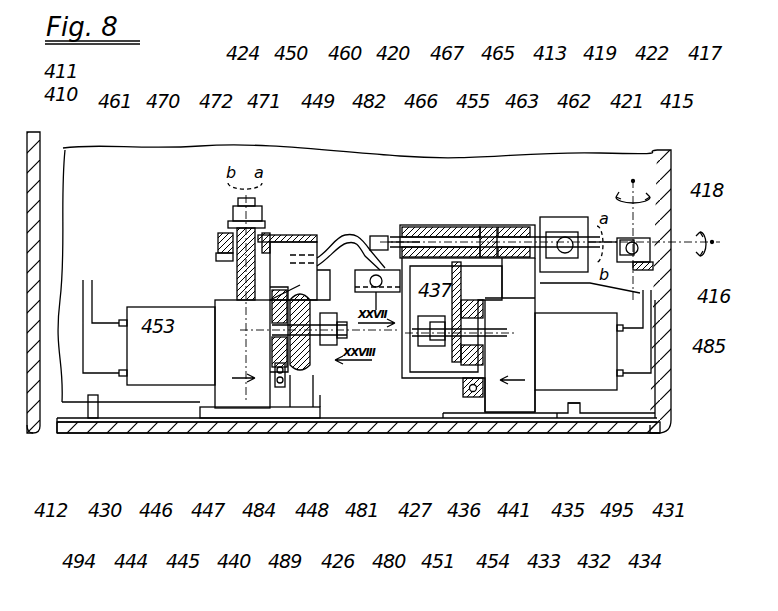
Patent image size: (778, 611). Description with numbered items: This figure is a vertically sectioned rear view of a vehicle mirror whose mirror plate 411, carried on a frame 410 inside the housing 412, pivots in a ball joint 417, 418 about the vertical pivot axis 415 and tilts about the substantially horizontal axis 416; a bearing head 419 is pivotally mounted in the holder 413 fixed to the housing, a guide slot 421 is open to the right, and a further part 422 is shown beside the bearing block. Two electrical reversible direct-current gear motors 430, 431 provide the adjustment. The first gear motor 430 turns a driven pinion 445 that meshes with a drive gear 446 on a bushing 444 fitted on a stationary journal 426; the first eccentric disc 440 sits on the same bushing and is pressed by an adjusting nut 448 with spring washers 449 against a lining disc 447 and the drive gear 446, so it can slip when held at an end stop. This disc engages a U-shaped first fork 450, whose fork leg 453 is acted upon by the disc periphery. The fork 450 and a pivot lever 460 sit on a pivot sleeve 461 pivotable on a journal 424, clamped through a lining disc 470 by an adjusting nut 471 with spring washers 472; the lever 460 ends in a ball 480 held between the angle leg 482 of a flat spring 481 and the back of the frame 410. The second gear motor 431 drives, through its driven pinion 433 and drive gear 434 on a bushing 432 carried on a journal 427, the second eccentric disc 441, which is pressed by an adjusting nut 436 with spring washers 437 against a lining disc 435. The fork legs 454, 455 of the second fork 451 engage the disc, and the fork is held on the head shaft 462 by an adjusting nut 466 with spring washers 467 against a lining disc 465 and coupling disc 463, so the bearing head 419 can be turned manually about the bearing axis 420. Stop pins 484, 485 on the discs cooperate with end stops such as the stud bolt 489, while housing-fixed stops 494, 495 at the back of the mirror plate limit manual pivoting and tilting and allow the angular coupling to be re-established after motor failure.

The frame 410 is at (83, 172).
The mirror plate 411 is at (57, 82).
The housing 412 is at (39, 430).
The holder 413 is at (512, 235).
The vertical pivot axis 415 is at (633, 180).
The horizontal axis 416 is at (712, 250).
The ball joint 417 is at (665, 230).
The ball joint 418 is at (652, 250).
The bearing head 419 is at (548, 235).
The bearing axis 420 is at (365, 245).
The guide slot 421 is at (560, 243).
The shaft end 422 is at (587, 230).
The journal 424 is at (246, 212).
The stationary journal 426 is at (372, 400).
The journal 427 is at (428, 380).
The first gear motor 430 is at (178, 355).
The second gear motor 431 is at (622, 402).
The bushing 432 is at (555, 395).
The driven pinion 433 is at (500, 405).
The drive gear 434 is at (592, 405).
The slip or brake lining disc 435 is at (530, 410).
The adjusting nut 436 is at (455, 370).
The spring washers 437 is at (452, 312).
The first eccentric disc 440 is at (300, 395).
The second eccentric disc 441 is at (478, 345).
The bushing 444 is at (232, 360).
The driven pinion 445 is at (282, 375).
The drive gear 446 is at (272, 350).
The slip or brake lining disc 447 is at (292, 385).
The adjusting nut 448 is at (368, 398).
The spring washers 449 is at (330, 255).
The first fork 450 is at (293, 240).
The second fork 451 is at (445, 410).
The fork leg 453 is at (215, 312).
The fork leg 454 is at (470, 400).
The fork leg 455 is at (420, 240).
The pivot lever 460 is at (348, 250).
The pivot sleeve 461 is at (218, 265).
The head shaft 462 is at (522, 240).
The coupling disc 463 is at (498, 240).
The slip or brake lining disc 465 is at (496, 235).
The adjusting nut 466 is at (390, 238).
The spring washers 467 is at (395, 260).
The slip or brake lining disc 470 is at (236, 262).
The adjusting nut 471 is at (293, 236).
The spring washers 472 is at (244, 255).
The ball 480 is at (385, 375).
The flat spring 481 is at (388, 395).
The angle leg 482 is at (358, 268).
The stop pin 484 is at (318, 395).
The stop pin 485 is at (630, 300).
The stud bolt 489 is at (345, 418).
The stop 494 is at (95, 405).
The stop 495 is at (575, 410).